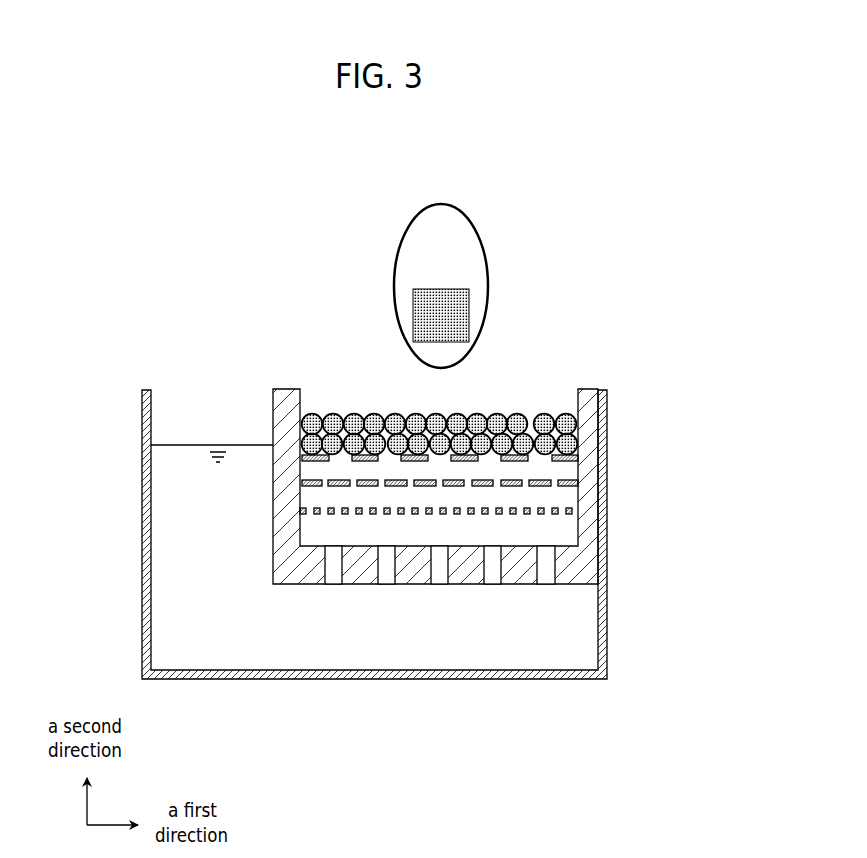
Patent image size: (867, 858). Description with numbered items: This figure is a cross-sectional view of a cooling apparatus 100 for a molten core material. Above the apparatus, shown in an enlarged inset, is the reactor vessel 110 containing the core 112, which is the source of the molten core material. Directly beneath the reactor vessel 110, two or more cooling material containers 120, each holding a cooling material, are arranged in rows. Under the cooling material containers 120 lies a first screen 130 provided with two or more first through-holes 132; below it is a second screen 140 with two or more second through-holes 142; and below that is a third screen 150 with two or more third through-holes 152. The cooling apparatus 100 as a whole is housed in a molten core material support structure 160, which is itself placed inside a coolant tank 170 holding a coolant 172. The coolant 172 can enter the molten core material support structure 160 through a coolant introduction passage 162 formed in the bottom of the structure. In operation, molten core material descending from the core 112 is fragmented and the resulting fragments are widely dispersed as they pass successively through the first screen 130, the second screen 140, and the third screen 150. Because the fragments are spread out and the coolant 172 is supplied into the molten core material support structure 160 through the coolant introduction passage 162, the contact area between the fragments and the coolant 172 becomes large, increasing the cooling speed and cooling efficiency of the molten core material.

The cooling apparatus for a molten core material 100 is at (127, 279).
The reactor vessel 110 is at (401, 286).
The core 112 is at (425, 316).
The cooling material containers 120 is at (515, 413).
The first screen 130 is at (491, 452).
The first through-holes 132 is at (547, 466).
The second screen 140 is at (487, 503).
The second through-holes 142 is at (558, 492).
The third screen 150 is at (496, 558).
The third through-holes 152 is at (556, 523).
The molten core material support structure 160 is at (331, 567).
The coolant introduction passage 162 is at (333, 574).
The coolant tank 170 is at (383, 678).
The coolant 172 is at (457, 645).